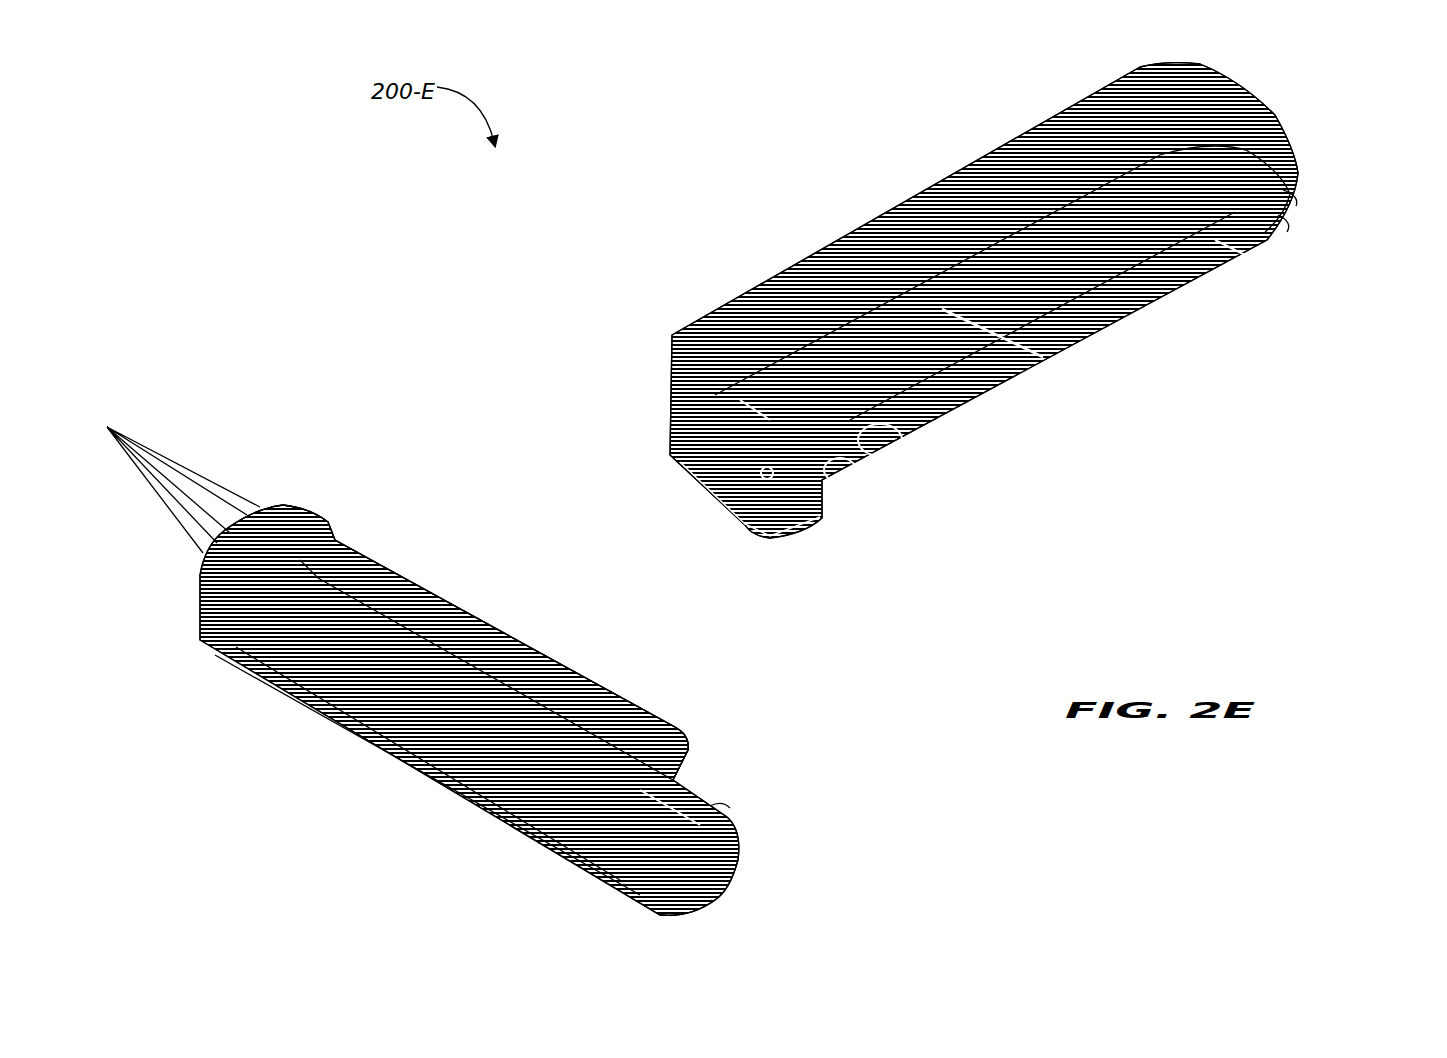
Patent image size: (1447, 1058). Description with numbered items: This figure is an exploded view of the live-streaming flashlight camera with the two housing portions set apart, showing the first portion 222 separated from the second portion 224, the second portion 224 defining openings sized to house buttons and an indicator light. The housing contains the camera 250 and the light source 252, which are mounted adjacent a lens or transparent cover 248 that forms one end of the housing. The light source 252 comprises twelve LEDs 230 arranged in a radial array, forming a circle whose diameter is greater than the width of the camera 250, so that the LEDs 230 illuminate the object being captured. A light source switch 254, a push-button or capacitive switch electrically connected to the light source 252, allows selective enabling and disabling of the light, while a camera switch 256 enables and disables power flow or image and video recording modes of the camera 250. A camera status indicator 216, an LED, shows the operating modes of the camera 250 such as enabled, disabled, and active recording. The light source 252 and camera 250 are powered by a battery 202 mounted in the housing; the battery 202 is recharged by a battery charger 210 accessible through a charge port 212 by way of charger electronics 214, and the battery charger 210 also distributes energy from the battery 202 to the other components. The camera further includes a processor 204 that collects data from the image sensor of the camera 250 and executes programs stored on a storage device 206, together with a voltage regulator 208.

The battery 202 is at (649, 690).
The processor 204 is at (1109, 326).
The storage device 206 is at (687, 793).
The voltage regulator 208 is at (548, 868).
The battery charger 210 is at (986, 406).
The charge port 212 is at (740, 860).
The charger electronics 214 is at (1297, 197).
The camera status indicator 216 is at (1230, 257).
The first portion 222 is at (1270, 112).
The second portion 224 is at (673, 917).
The LEDs 230 is at (165, 475).
The transparent cover 248 is at (723, 503).
The camera 250 is at (755, 410).
The light source 252 is at (767, 473).
The light source switch 254 is at (903, 460).
The camera switch 256 is at (850, 480).